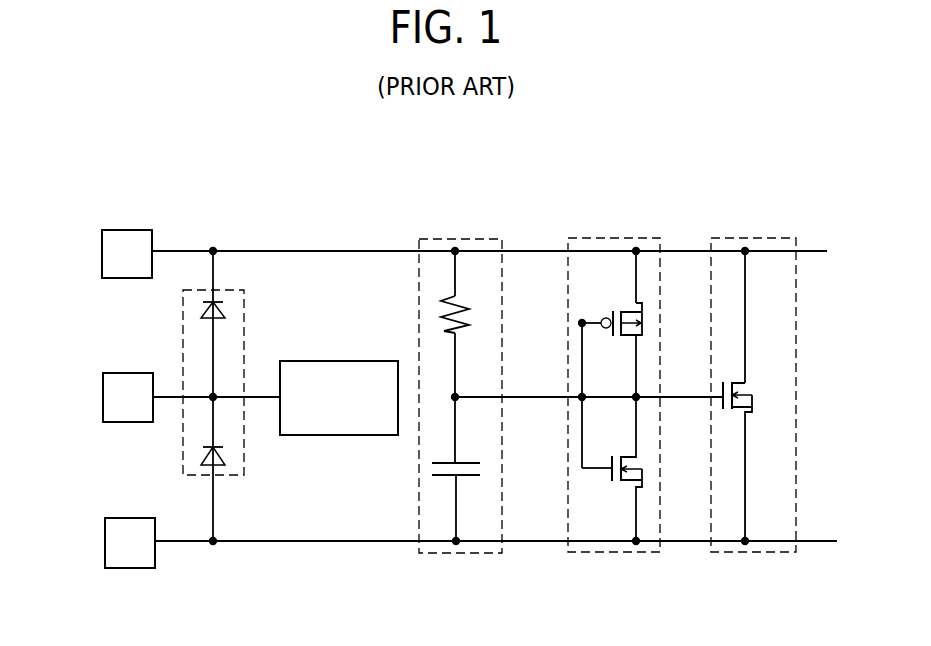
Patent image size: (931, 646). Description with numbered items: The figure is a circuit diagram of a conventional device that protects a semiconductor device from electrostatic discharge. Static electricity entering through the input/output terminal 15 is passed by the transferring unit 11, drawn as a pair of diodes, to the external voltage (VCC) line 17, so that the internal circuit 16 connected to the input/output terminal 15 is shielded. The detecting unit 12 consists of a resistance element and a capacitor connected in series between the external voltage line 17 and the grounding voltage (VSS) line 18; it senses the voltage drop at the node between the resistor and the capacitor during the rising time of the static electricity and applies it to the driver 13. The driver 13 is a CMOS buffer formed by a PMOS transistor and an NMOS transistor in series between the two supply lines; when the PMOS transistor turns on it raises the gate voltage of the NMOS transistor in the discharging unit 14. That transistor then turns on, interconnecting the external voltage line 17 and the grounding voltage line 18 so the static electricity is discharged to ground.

The transferring unit 11 is at (244, 305).
The detecting unit 12 is at (450, 239).
The driver 13 is at (610, 238).
The discharging unit 14 is at (745, 238).
The input/output terminal 15 is at (130, 423).
The internal circuit 16 is at (325, 435).
The external voltage (VCC) line 17 is at (183, 251).
The grounding voltage (VSS) line 18 is at (183, 543).